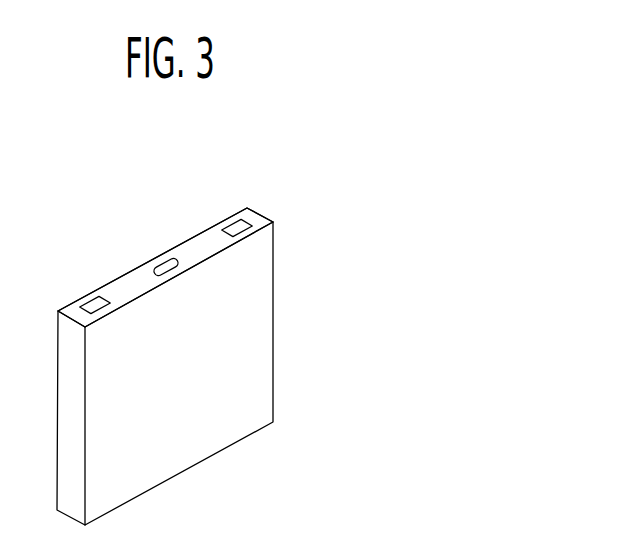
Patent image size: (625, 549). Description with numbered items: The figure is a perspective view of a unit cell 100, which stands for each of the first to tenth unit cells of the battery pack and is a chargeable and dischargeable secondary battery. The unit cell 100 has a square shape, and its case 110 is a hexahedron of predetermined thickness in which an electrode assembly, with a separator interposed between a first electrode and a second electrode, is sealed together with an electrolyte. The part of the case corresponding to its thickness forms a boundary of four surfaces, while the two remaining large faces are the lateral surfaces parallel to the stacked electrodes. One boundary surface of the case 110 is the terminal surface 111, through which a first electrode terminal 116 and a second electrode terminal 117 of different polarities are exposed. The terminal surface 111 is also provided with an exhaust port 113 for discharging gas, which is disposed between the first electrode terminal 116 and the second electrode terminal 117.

The unit cell 100 is at (190, 317).
The case 110 is at (267, 328).
The terminal surface 111 is at (202, 242).
The exhaust port 113 is at (167, 265).
The first electrode terminal 116 is at (239, 225).
The second electrode terminal 117 is at (93, 304).